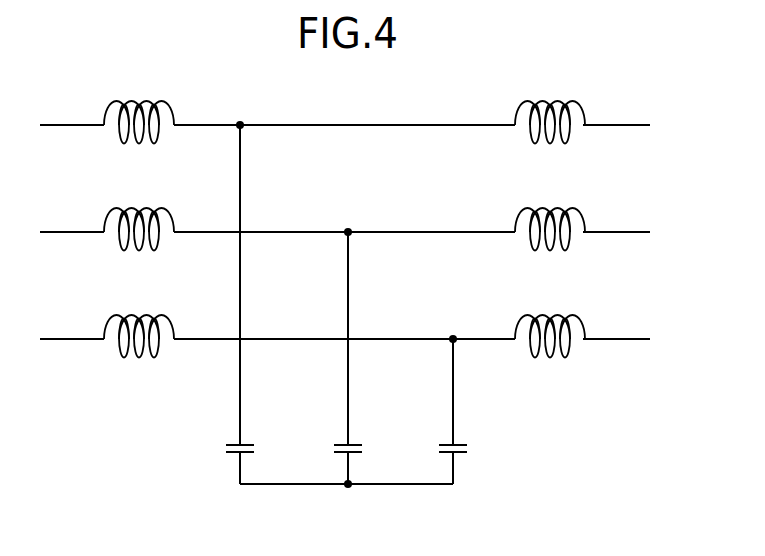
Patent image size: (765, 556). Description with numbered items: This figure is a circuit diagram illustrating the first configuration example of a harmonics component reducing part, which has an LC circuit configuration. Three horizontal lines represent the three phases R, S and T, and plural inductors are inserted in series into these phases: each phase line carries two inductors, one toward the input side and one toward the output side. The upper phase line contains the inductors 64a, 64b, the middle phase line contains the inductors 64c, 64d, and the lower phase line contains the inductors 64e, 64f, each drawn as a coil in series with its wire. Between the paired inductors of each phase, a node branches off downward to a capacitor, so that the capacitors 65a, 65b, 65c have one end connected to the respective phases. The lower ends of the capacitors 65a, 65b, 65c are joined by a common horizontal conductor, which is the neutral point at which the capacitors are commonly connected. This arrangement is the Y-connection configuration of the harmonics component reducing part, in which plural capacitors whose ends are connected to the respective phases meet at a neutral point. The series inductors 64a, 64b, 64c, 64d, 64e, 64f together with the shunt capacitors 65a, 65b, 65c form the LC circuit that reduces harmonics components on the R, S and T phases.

The inductor 64a is at (158, 131).
The inductor 64b is at (569, 131).
The inductor 64c is at (158, 238).
The inductor 64d is at (569, 238).
The inductor 64e is at (158, 345).
The inductor 64f is at (569, 345).
The capacitor 65a is at (251, 446).
The capacitor 65b is at (359, 446).
The capacitor 65c is at (464, 446).